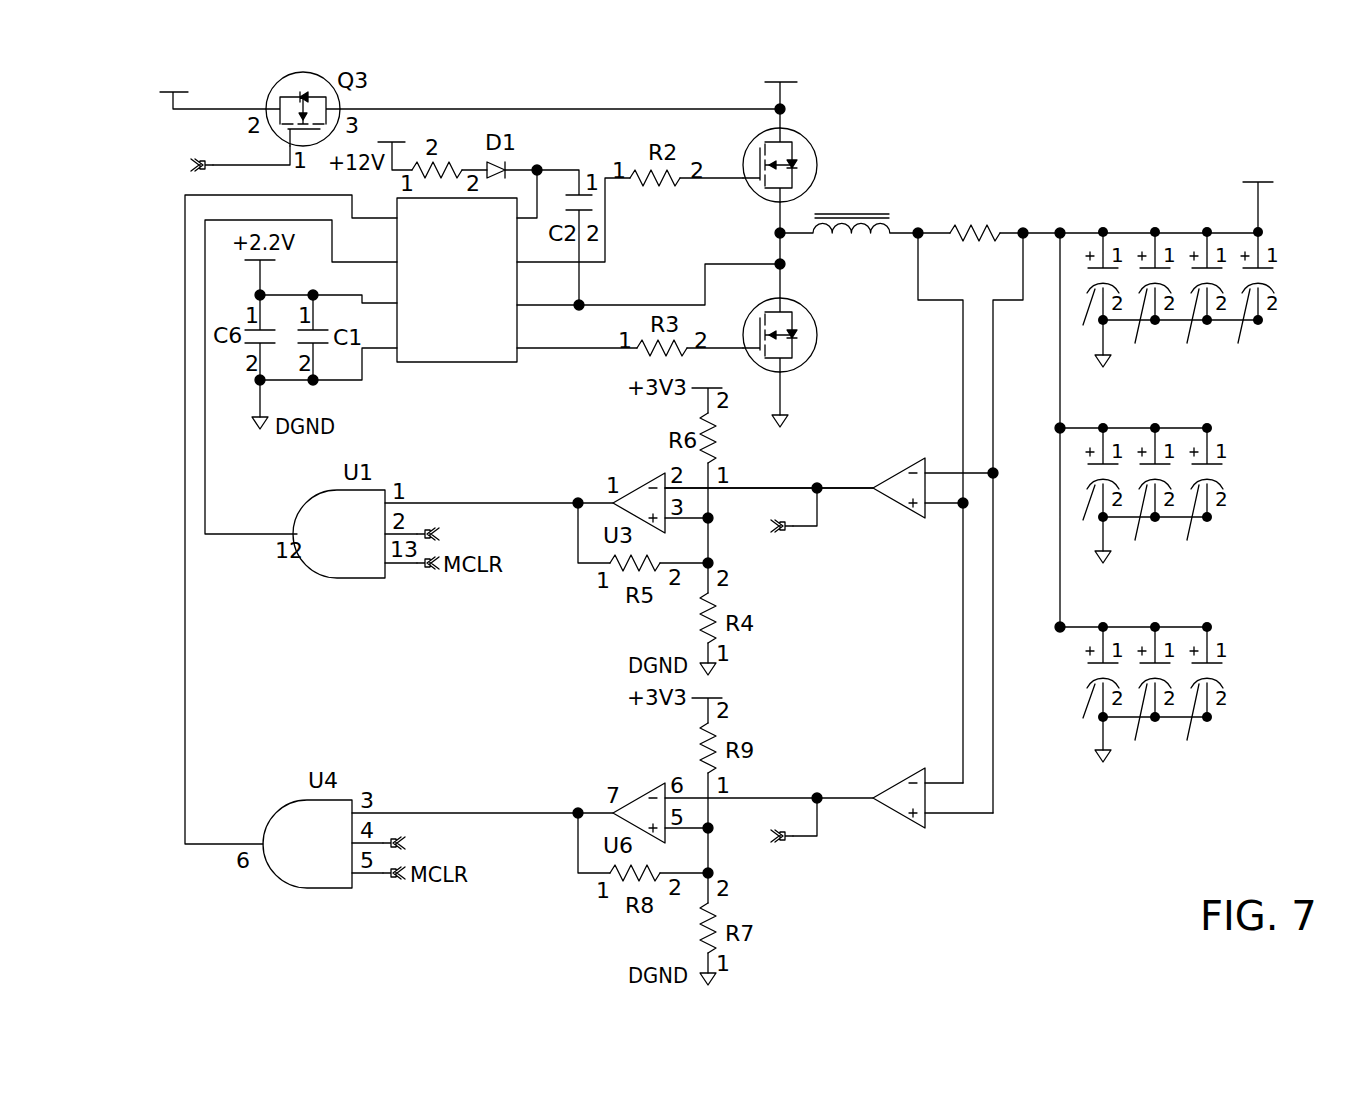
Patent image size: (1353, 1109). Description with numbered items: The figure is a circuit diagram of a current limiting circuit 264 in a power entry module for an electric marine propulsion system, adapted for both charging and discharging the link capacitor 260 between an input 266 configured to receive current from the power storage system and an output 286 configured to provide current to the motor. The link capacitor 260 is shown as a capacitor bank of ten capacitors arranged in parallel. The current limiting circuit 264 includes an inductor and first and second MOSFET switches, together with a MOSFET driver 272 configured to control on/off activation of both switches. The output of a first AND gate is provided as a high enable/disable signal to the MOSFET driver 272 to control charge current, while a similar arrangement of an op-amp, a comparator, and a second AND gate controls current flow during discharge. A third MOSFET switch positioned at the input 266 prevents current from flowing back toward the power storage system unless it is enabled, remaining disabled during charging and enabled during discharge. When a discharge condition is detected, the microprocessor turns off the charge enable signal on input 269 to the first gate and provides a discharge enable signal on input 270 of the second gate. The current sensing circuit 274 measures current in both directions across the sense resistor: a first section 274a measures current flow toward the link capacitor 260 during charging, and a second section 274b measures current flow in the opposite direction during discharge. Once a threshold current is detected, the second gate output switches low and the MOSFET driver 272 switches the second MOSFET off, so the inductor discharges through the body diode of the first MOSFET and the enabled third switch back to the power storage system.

The link capacitor 260 is at (1141, 197).
The current limiting circuit 264 is at (1094, 109).
The input 266 is at (192, 109).
The input 269 is at (412, 532).
The input 270 is at (380, 842).
The MOSFET driver 272 is at (457, 362).
The current sensing circuit 274 is at (1021, 172).
The first section 274a is at (957, 388).
The second section 274b is at (957, 668).
The output 286 is at (1258, 202).